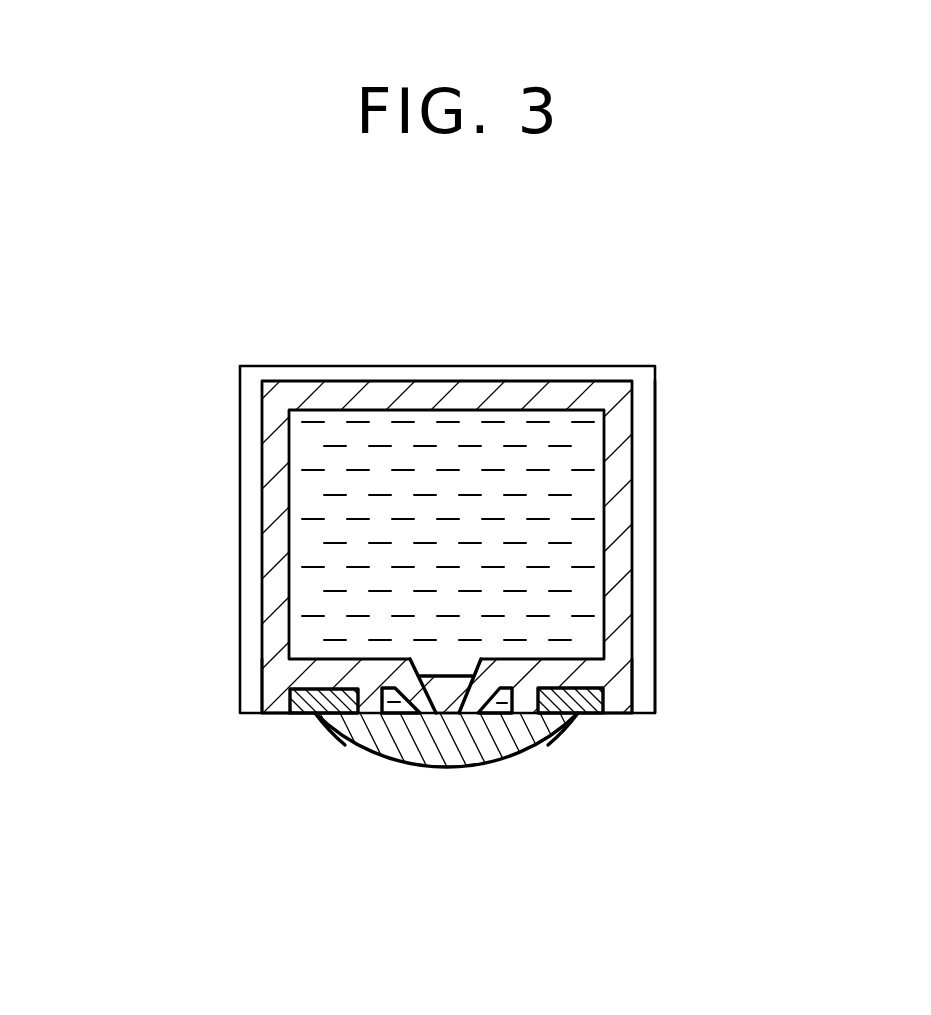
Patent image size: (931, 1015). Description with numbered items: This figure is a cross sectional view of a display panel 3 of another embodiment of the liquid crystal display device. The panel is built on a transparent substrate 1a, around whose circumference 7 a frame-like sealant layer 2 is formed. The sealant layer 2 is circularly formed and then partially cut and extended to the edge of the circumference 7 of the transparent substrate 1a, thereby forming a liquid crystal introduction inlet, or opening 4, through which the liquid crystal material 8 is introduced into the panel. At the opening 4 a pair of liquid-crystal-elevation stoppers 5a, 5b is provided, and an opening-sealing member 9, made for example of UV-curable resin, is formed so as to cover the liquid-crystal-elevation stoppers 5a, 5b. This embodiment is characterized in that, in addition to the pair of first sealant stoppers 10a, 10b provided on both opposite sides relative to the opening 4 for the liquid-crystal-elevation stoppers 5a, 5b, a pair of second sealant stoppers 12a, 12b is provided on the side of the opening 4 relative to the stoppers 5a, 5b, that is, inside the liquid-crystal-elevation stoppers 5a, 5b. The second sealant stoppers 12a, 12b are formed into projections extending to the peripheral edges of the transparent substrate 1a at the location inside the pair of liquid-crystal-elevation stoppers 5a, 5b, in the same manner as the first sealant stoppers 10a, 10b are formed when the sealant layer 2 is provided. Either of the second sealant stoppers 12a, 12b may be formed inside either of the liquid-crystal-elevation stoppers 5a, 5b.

The display panel 3 is at (414, 351).
The transparent substrate 1a is at (645, 366).
The frame-like sealant layer 2 is at (622, 463).
The circumference 7 is at (660, 515).
The first sealant stopper 10a is at (618, 687).
The first sealant stopper 10b is at (270, 683).
The liquid-crystal-elevation stopper 5a is at (577, 716).
The liquid-crystal-elevation stopper 5b is at (322, 725).
The liquid crystal material 8 is at (452, 650).
The liquid crystal introduction inlet sealing portion 9 is at (488, 738).
The liquid crystal introduction inlet 4 is at (448, 742).
The second sealant stopper 12a is at (555, 710).
The second sealant stopper 12b is at (357, 716).